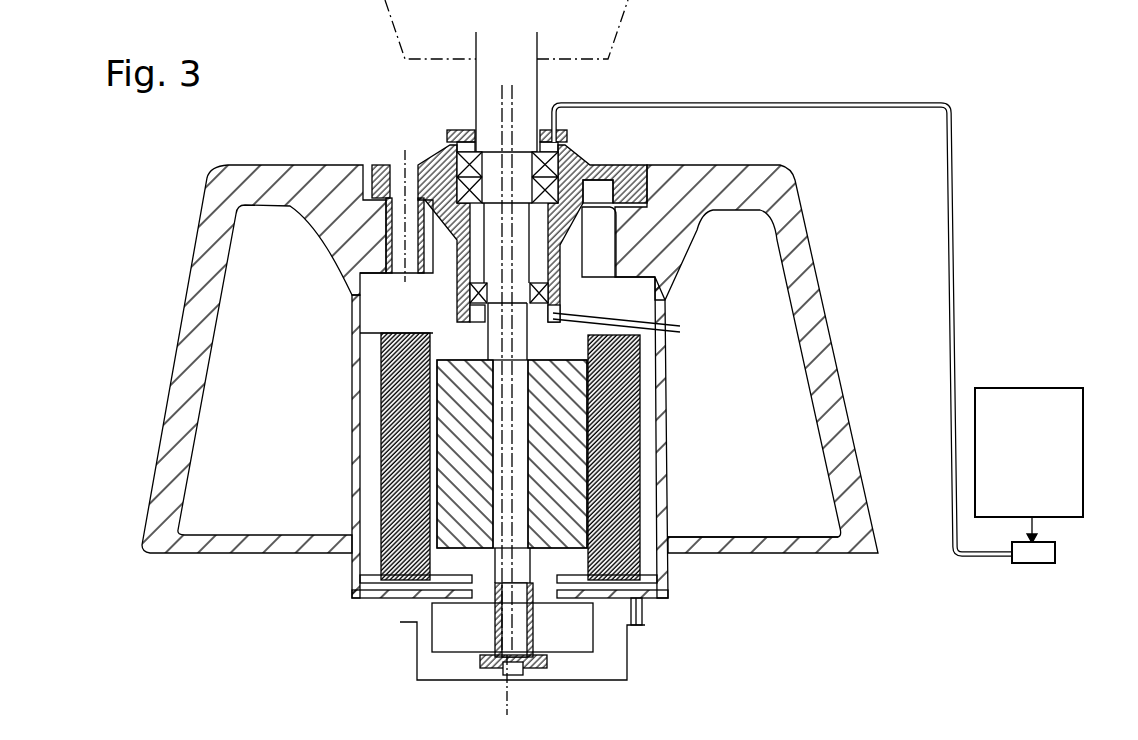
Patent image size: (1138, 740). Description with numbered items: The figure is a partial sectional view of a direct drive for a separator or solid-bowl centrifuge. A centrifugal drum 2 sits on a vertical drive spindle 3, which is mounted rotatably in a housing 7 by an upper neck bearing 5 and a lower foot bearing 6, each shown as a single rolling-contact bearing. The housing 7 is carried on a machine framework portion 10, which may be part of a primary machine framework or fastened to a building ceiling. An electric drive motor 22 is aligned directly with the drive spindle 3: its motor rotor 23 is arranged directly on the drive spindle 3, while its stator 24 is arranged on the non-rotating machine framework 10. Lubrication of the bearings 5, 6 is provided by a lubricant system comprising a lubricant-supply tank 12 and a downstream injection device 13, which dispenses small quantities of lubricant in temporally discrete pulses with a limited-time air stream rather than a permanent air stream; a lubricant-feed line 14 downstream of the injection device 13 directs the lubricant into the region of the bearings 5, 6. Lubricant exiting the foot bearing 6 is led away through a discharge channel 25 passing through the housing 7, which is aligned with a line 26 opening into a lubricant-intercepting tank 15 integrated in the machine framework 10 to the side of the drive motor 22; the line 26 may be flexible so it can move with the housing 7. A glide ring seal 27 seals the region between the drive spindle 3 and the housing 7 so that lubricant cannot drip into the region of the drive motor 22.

The centrifugal drum 2 is at (610, 51).
The drive spindle 3 is at (476, 93).
The neck bearing 5 is at (560, 163).
The foot bearing 6 is at (473, 294).
The housing 7 is at (633, 165).
The machine framework portion 10 is at (853, 493).
The lubricant-supply tank 12 is at (1083, 465).
The injection device 13 is at (1040, 565).
The lubricant-feed line 14 is at (870, 103).
The lubricant-intercepting tank 15 is at (750, 517).
The electric drive motor 22 is at (587, 558).
The motor rotor 23 is at (463, 523).
The stator 24 is at (397, 577).
The discharge channel 25 is at (553, 312).
The line 26 is at (660, 338).
The glide ring seal 27 is at (470, 323).